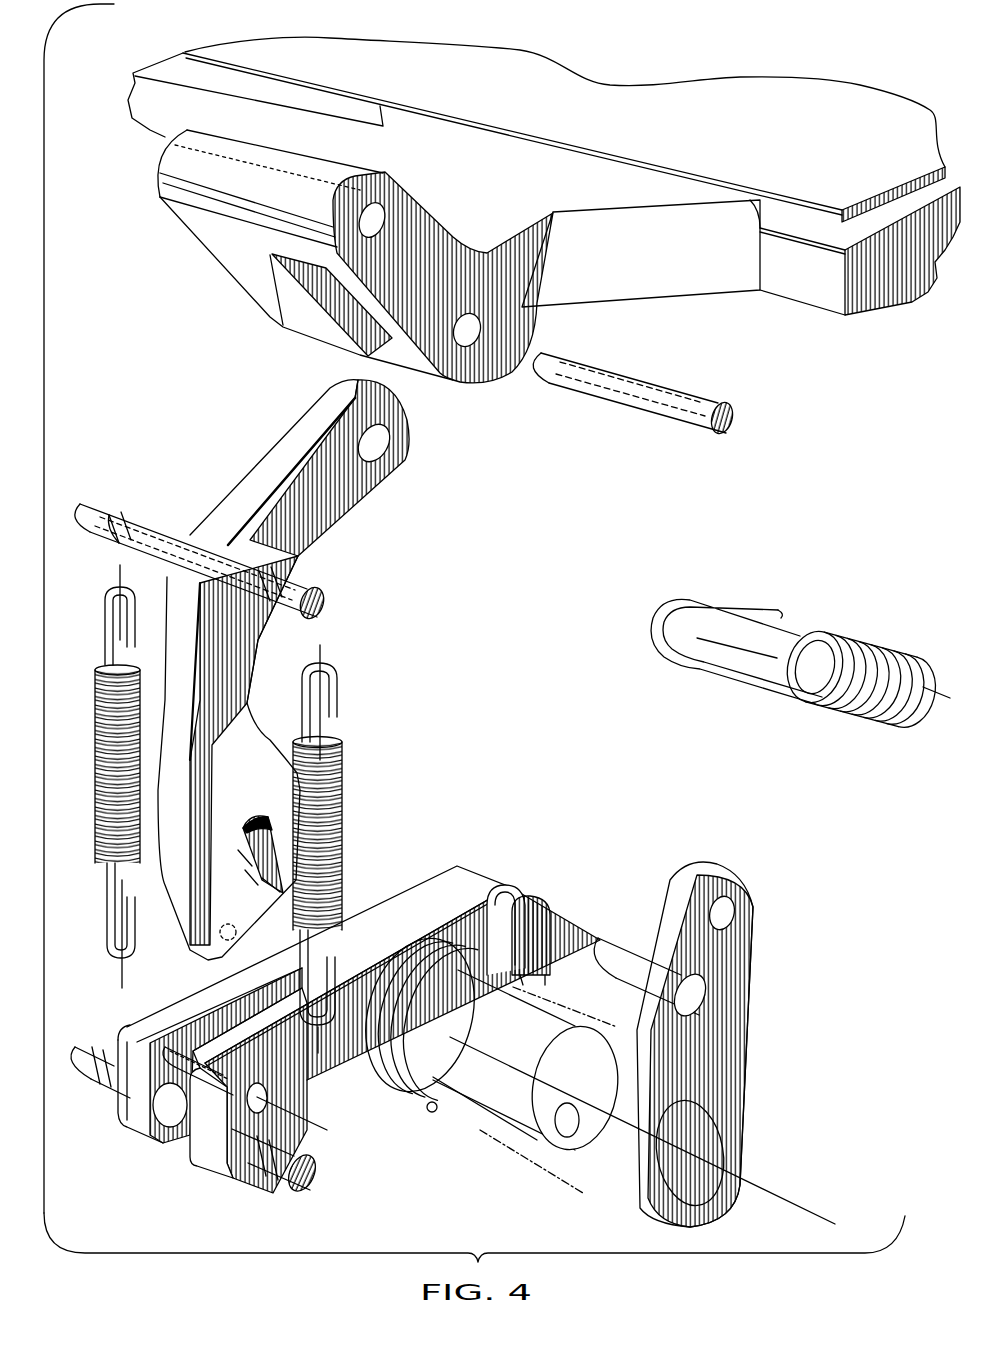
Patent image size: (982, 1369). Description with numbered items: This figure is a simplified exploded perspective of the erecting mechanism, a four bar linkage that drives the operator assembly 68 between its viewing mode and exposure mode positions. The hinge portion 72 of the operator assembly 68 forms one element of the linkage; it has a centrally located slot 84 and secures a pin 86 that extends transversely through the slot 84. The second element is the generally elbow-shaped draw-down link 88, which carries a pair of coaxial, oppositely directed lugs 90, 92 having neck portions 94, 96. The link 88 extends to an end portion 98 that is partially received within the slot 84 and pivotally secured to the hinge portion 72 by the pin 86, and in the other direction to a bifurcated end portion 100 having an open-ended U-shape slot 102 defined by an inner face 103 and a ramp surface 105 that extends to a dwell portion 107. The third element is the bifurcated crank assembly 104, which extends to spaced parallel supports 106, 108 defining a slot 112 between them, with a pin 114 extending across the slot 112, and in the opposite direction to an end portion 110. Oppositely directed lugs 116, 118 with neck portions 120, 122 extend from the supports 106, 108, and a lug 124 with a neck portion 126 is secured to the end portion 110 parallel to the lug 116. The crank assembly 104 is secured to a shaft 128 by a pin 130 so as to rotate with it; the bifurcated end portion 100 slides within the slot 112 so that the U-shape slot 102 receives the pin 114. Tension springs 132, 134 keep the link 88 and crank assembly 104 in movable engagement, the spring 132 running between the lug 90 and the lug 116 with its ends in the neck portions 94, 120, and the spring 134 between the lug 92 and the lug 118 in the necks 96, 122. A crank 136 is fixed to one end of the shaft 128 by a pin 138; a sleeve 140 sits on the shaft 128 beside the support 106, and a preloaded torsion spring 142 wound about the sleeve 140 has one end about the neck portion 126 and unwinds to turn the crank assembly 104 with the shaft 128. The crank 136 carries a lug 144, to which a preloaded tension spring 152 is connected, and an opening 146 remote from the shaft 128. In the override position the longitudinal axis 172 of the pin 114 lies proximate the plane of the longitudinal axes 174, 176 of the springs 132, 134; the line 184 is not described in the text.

The operator assembly 68 is at (878, 306).
The hinge portion 72 is at (533, 343).
The slot 84 is at (366, 350).
The pin 86 is at (640, 374).
The draw-down link 88 is at (223, 553).
The lug 90 is at (295, 603).
The lug 92 is at (100, 510).
The neck portion 94 is at (278, 584).
The neck portion 96 is at (121, 517).
The end portion 98 is at (297, 447).
The bifurcated end portion 100 is at (274, 670).
The U-shape slot 102 is at (253, 893).
The inner face 103 is at (240, 833).
The bifurcated crank assembly 104 is at (440, 1020).
The ramp surface 105 is at (260, 867).
The support 106 is at (359, 1026).
The dwell portion 107 is at (257, 908).
The support 108 is at (177, 1003).
The end portion 110 is at (470, 880).
The slot 112 is at (177, 1147).
The pin 114 is at (205, 1032).
The lug 116 is at (276, 1177).
The lug 118 is at (88, 1073).
The neck portion 120 is at (233, 1180).
The neck portion 122 is at (82, 1085).
The lug 124 is at (545, 920).
The neck portion 126 is at (517, 890).
The shaft 128 is at (713, 1140).
The pin 130 is at (236, 930).
The tension spring 132 is at (336, 846).
The tension spring 134 is at (94, 776).
The crank 136 is at (690, 1044).
The pin 138 is at (573, 1120).
The sleeve 140 is at (489, 1060).
The torsion spring 142 is at (435, 1110).
The lug 144 is at (662, 963).
The opening 146 is at (740, 908).
The tension spring 152 is at (887, 630).
The longitudinal axis 172 is at (310, 1123).
The longitudinal axis 174 is at (318, 651).
The longitudinal axis 176 is at (120, 582).
The axis line 184 is at (747, 1187).